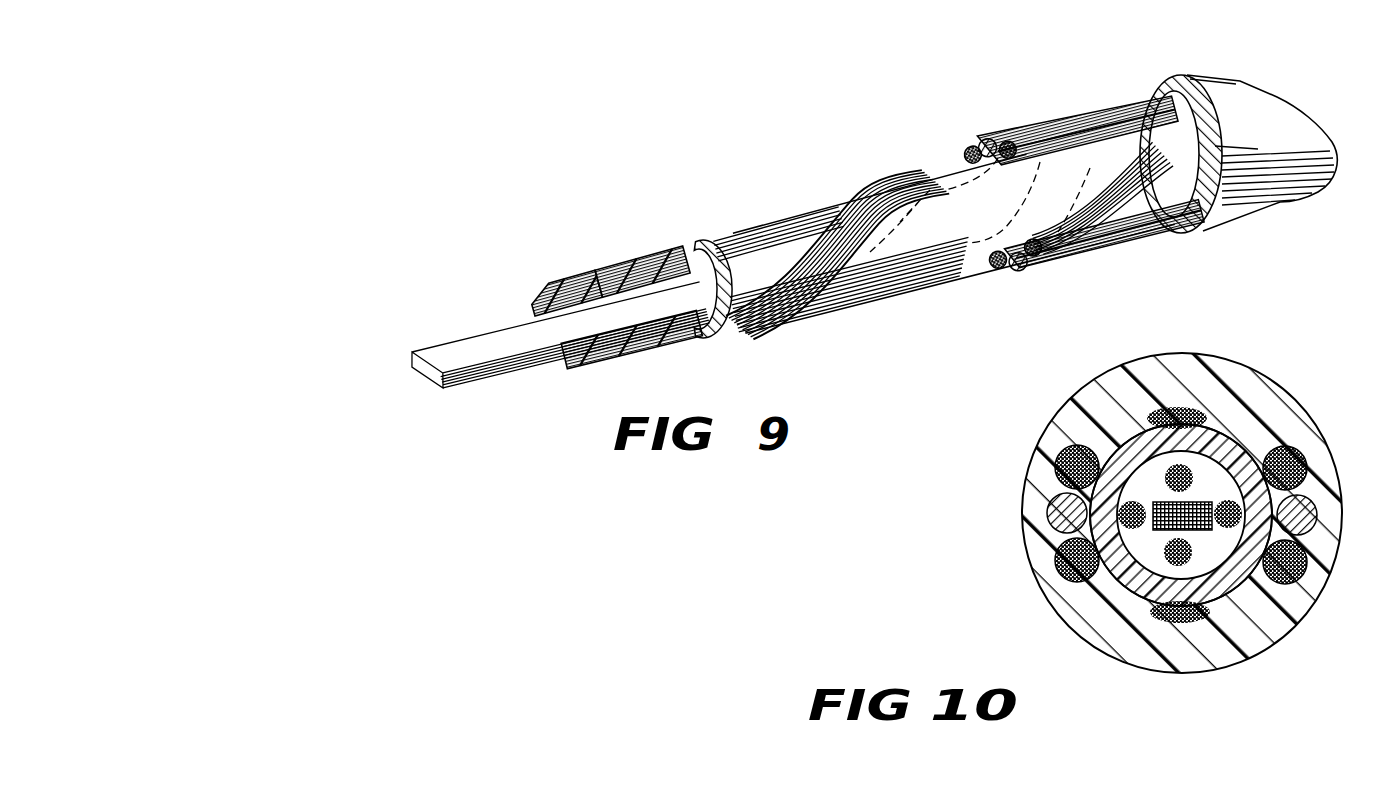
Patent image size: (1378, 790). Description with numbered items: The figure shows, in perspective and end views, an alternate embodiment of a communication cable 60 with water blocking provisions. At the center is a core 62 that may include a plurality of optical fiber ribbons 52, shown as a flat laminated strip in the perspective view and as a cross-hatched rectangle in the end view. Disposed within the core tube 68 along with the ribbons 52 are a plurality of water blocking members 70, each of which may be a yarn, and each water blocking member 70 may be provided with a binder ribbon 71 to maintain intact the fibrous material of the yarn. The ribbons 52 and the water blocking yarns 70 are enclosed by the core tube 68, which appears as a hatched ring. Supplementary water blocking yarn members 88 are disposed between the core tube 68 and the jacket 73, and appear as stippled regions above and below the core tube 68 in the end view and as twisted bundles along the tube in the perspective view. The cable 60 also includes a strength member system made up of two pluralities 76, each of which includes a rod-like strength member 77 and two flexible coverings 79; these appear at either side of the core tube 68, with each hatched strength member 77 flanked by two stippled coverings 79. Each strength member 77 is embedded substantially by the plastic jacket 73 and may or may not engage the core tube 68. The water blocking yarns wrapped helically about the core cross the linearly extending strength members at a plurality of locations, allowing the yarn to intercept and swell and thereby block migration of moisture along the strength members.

In FIG. 9, the optical fiber ribbon 52 is at (462, 339).
In FIG. 10, the optical fiber ribbon 52 is at (1165, 531).
In FIG. 9, the cable 60 is at (744, 112).
In FIG. 10, the cable 60 is at (1255, 323).
In FIG. 9, the core 62 is at (559, 384).
In FIG. 9, the core tube 68 is at (683, 247).
In FIG. 10, the core tube 68 is at (1228, 583).
In FIG. 9, the water blocking member 70 is at (660, 273).
In FIG. 10, the water blocking member 70 is at (1220, 530).
In FIG. 9, the binder ribbon 71 is at (602, 287).
In FIG. 9, the jacket 73 is at (1193, 223).
In FIG. 10, the jacket 73 is at (1240, 380).
In FIG. 9, the plurality of strength member system 76 is at (955, 159).
In FIG. 9, the rod-like strength member 77 is at (996, 138).
In FIG. 10, the rod-like strength member 77 is at (1047, 503).
In FIG. 9, the flexible covering 79 is at (1060, 130).
In FIG. 10, the flexible covering 79 is at (1057, 450).
In FIG. 9, the supplementary water blocking yarn member 88 is at (745, 318).
In FIG. 10, the supplementary water blocking yarn member 88 is at (1180, 410).